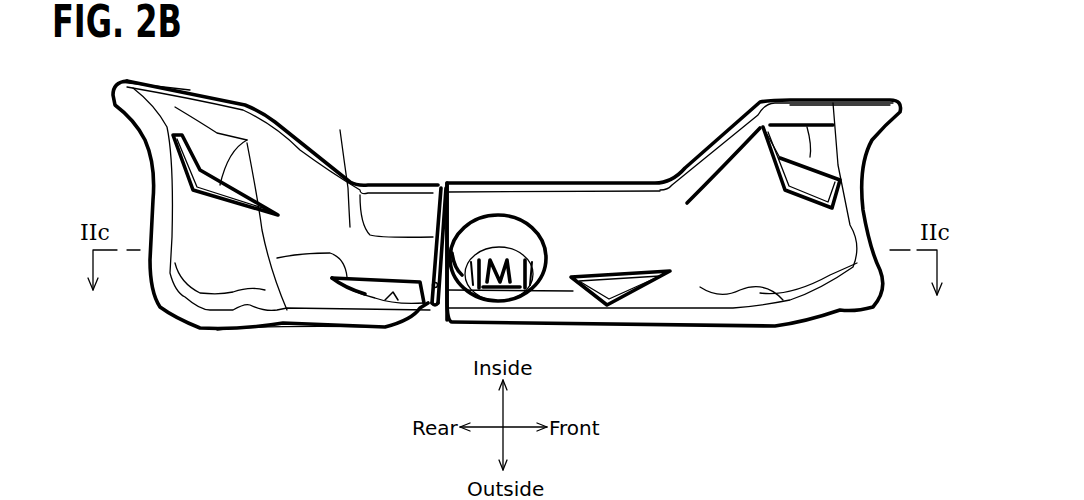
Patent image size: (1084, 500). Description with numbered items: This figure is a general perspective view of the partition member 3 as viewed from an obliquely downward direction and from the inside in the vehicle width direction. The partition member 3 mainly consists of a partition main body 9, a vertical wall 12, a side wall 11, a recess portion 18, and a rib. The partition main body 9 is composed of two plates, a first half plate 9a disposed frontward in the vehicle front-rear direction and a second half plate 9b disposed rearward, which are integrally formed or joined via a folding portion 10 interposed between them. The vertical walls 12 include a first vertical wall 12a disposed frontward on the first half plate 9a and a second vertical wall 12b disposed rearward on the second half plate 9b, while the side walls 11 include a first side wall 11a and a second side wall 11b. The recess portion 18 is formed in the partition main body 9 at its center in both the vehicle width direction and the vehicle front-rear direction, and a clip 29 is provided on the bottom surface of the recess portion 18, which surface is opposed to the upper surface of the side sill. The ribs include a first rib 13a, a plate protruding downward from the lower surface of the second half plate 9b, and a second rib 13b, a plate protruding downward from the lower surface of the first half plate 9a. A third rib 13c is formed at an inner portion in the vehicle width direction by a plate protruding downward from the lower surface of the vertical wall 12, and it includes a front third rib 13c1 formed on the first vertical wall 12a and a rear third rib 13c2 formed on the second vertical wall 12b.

The partition member 3 is at (667, 76).
The partition main body 9 is at (442, 197).
The first half plate 9a is at (490, 180).
The second half plate 9b is at (397, 183).
The folding portion 10 is at (348, 188).
The side wall 11 is at (496, 349).
The first side wall 11a is at (615, 325).
The second side wall 11b is at (307, 317).
The vertical wall 12 is at (524, 75).
The first vertical wall 12a is at (843, 103).
The second vertical wall 12b is at (142, 112).
The first rib 13a is at (392, 325).
The second rib 13b is at (610, 283).
The third rib 13c is at (506, 115).
The front third rib 13c1 is at (765, 110).
The rear third rib 13c2 is at (253, 138).
The recess portion 18 is at (502, 237).
The clip 29 is at (507, 295).